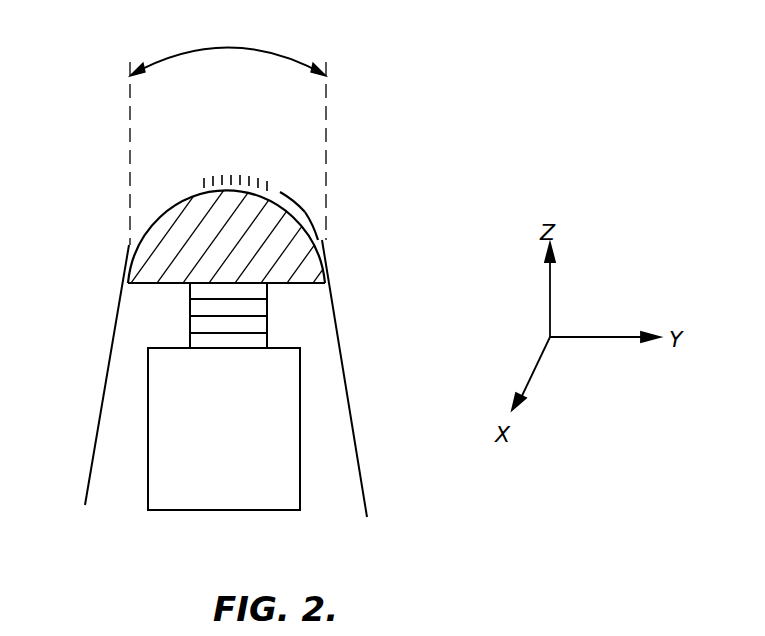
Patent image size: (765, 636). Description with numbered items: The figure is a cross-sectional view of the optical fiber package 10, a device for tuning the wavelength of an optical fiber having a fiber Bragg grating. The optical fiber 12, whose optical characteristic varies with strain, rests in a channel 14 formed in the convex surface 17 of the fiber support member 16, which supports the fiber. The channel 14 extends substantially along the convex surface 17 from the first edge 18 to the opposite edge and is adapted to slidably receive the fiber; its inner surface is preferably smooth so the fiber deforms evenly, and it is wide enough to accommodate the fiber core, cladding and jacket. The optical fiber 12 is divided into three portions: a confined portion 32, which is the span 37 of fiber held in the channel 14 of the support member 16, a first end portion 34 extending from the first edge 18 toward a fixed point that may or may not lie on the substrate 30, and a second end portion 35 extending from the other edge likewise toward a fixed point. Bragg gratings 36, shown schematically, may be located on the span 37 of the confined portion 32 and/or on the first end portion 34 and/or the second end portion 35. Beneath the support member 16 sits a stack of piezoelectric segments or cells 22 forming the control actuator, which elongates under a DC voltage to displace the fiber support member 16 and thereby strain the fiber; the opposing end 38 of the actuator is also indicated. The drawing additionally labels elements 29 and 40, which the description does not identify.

The optical fiber package 10 is at (482, 90).
The optical fiber 12 is at (347, 383).
The channel 14 is at (326, 281).
The fiber support member 16 is at (300, 195).
The convex surface 17 is at (309, 224).
The first edge 18 is at (126, 283).
The piezoelectric segments 22 is at (258, 308).
The layers 29 is at (257, 330).
The substrate 30 is at (242, 468).
The confined portion 32 is at (170, 193).
The first end portion 34 is at (102, 418).
The second end portion 35 is at (357, 440).
The Bragg gratings 36 is at (229, 178).
The span 37 is at (243, 50).
The opposing end 38 is at (190, 343).
The upper layer 40 is at (190, 291).